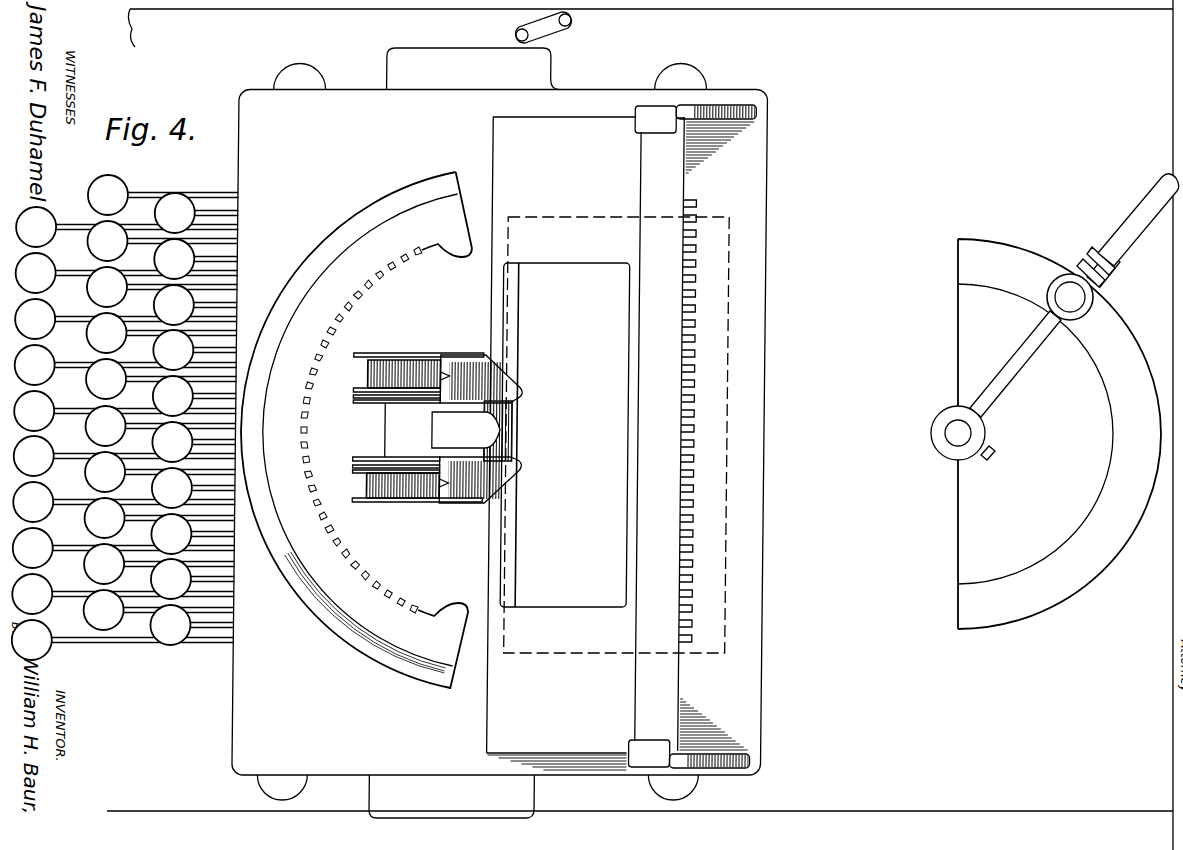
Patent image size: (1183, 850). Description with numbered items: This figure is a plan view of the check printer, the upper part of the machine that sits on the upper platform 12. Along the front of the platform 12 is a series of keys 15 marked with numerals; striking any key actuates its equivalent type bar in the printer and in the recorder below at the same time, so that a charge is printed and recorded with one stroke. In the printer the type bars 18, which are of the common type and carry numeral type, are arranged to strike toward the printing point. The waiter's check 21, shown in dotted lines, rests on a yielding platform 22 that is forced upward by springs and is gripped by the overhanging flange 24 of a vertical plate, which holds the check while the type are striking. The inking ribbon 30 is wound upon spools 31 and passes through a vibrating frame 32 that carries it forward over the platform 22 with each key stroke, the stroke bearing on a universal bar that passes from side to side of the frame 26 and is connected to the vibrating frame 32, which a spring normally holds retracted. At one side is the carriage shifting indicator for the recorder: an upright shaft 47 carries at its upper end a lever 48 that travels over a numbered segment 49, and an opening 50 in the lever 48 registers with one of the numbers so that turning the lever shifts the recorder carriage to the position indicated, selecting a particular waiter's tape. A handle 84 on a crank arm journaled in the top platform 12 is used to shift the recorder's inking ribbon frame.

The upper platform 12 is at (469, 433).
The keys 15 is at (154, 537).
The type bars 18 is at (308, 418).
The waiter's check 21 is at (727, 407).
The yielding platform 22 is at (628, 478).
The overhanging flange 24 is at (519, 357).
The frame 26 is at (766, 278).
The inking ribbon 30 is at (428, 494).
The spools 31 is at (428, 356).
The vibrating frame 32 is at (474, 505).
The upright shaft 47 is at (943, 433).
The lever 48 is at (1010, 402).
The numbered segment 49 is at (1109, 467).
The opening 50 is at (1090, 300).
The handle 84 is at (523, 29).